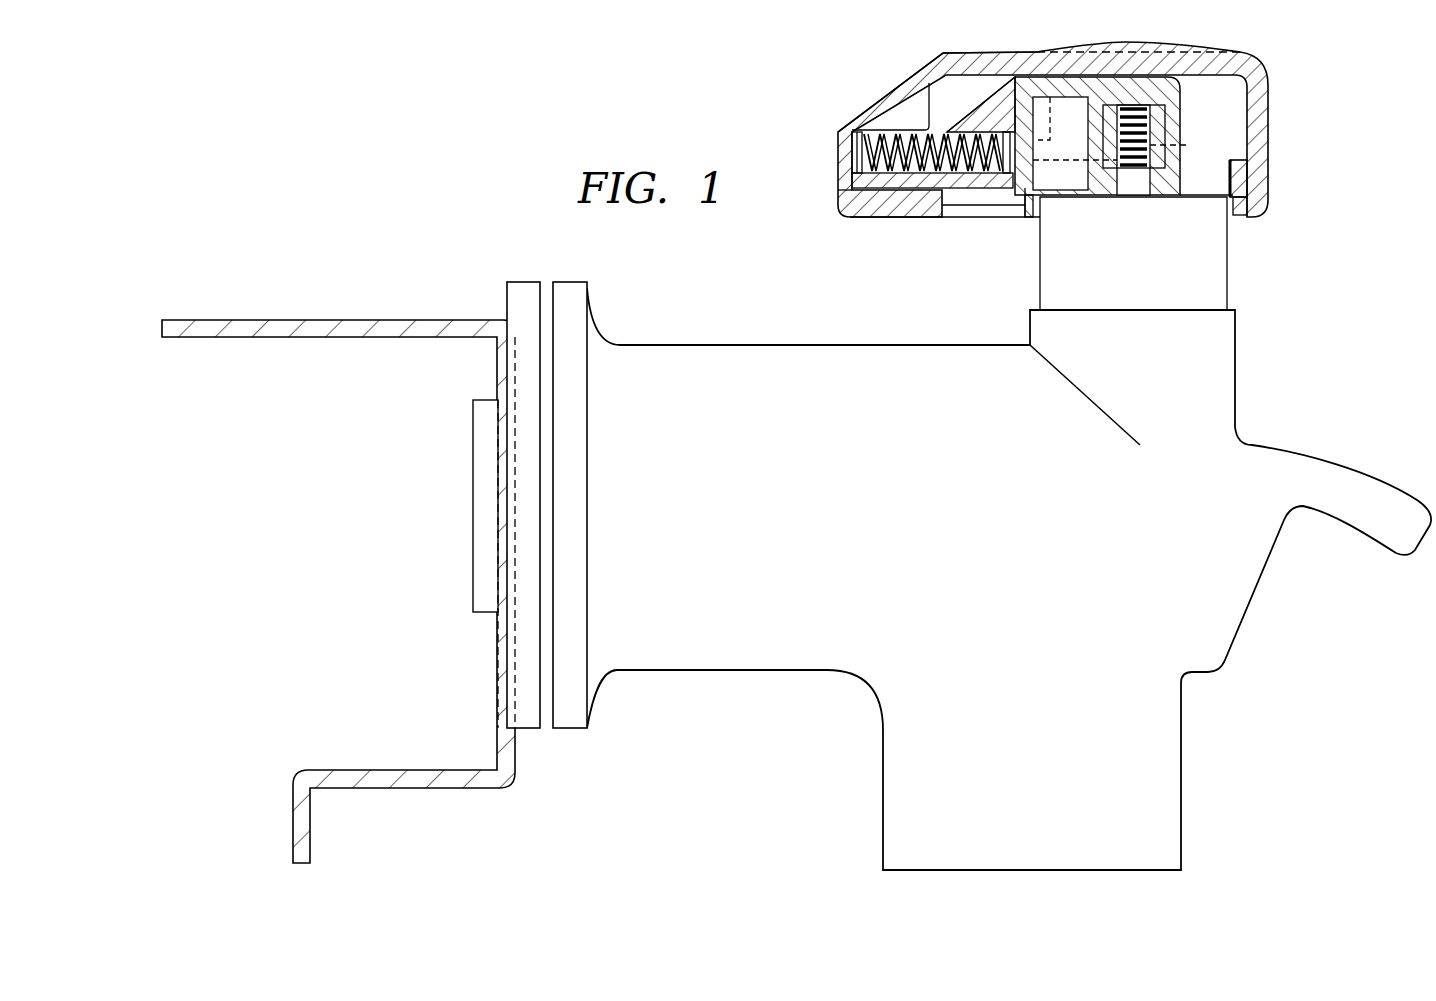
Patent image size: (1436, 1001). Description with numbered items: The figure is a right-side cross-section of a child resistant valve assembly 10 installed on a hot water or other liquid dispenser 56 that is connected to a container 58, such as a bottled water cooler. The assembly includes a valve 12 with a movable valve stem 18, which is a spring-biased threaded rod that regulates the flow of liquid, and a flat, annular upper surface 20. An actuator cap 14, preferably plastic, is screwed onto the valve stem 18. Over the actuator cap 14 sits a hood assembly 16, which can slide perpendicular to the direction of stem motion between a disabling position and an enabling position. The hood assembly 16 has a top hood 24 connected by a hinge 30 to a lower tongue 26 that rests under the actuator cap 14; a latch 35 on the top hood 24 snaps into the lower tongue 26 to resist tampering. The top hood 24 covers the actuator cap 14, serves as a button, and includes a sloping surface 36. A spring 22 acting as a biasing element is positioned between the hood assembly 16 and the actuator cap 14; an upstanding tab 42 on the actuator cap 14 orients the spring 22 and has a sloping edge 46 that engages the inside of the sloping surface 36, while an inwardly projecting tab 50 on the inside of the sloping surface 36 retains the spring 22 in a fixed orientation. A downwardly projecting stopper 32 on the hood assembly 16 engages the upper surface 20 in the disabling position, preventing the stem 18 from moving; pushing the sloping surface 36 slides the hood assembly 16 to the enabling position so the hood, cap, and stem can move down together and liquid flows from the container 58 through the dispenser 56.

The child resistant valve assembly 10 is at (826, 92).
The valve 12 is at (1212, 285).
The actuator cap 14 is at (1180, 112).
The hood assembly 16 is at (1269, 97).
The valve stem 18 is at (1150, 147).
The upper surface 20 is at (1212, 193).
The spring 22 is at (931, 180).
The top hood 24 is at (997, 51).
The lower tongue 26 is at (880, 218).
The hinge 30 is at (824, 188).
The stopper 32 is at (1240, 161).
The latch 35 is at (1240, 216).
The sloping surface 36 is at (878, 101).
The upstanding tab 42 is at (990, 124).
The sloping edge 46 is at (993, 107).
The inwardly projecting tab 50 is at (917, 100).
The dispenser 56 is at (1228, 765).
The container 58 is at (339, 292).